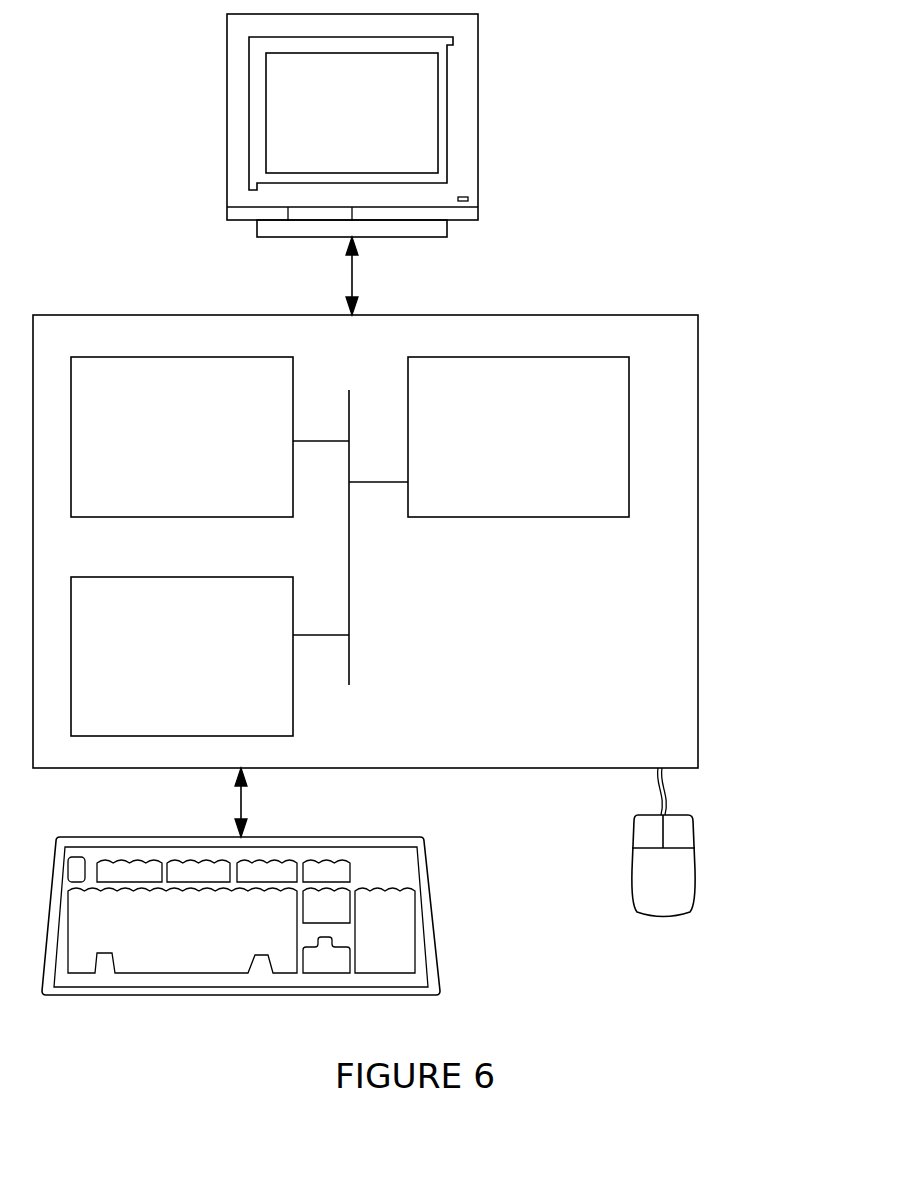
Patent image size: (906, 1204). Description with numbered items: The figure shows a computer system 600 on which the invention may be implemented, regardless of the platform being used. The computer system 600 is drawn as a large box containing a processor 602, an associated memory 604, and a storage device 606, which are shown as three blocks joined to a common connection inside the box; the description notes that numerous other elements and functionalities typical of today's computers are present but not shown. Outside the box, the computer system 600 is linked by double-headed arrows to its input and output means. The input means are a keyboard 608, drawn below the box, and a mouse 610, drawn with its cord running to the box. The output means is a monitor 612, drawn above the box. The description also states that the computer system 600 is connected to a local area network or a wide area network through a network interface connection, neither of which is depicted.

The computer system 600 is at (718, 168).
The processor 602 is at (198, 447).
The memory 604 is at (194, 668).
The storage device 606 is at (531, 447).
The keyboard 608 is at (215, 941).
The mouse 610 is at (704, 838).
The monitor 612 is at (367, 126).